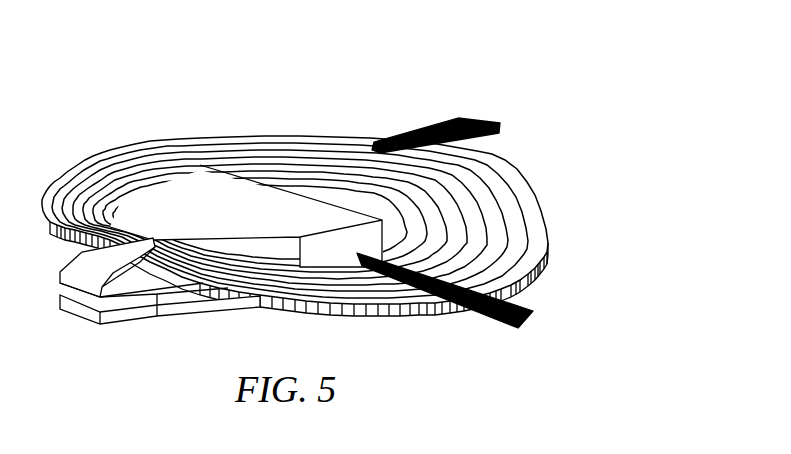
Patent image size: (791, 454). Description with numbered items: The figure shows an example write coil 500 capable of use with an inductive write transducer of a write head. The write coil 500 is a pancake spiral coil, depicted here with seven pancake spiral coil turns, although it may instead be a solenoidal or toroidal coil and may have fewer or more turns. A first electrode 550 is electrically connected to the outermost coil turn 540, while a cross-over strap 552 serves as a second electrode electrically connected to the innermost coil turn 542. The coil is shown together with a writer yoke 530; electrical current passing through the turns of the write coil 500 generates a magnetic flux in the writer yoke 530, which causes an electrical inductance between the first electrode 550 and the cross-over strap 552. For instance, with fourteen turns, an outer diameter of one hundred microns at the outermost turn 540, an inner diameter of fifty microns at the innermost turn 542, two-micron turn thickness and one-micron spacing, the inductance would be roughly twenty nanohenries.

The write coil 500 is at (298, 71).
The writer yoke 530 is at (167, 150).
The outermost coil turn 540 is at (548, 243).
The innermost coil turn 542 is at (403, 243).
The first electrode 550 is at (466, 120).
The cross-over strap 552 is at (517, 327).